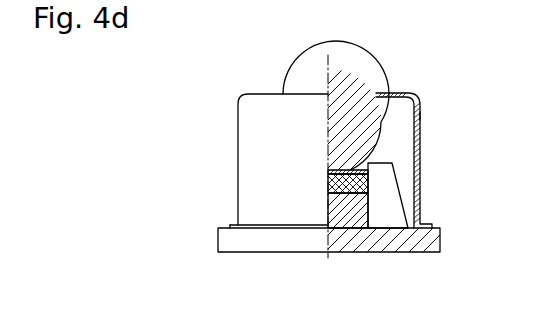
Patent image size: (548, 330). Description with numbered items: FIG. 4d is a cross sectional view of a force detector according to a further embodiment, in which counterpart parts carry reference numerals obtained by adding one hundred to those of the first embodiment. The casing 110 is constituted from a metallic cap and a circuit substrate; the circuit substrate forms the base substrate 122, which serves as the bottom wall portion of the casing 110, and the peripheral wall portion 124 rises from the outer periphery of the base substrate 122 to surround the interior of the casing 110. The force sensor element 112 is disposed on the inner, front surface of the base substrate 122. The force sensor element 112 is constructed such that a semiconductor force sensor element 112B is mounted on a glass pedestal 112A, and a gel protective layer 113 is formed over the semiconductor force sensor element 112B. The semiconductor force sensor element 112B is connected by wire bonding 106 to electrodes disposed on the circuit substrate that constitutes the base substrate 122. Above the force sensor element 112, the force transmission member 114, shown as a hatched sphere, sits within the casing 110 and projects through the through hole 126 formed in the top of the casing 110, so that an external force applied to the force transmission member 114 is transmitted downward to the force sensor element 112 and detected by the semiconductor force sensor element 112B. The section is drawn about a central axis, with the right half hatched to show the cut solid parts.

The force transmission member 114 is at (343, 69).
The peripheral wall portion 124 is at (238, 126).
The through hole 126 is at (378, 93).
The casing 110 is at (421, 116).
The base substrate 122 is at (254, 241).
The semiconductor force sensor element 112B is at (328, 171).
The gel protective layer 113 is at (346, 172).
The force sensor element 112 is at (348, 180).
The glass pedestal 112A is at (358, 215).
The wire bonding 106 is at (396, 186).